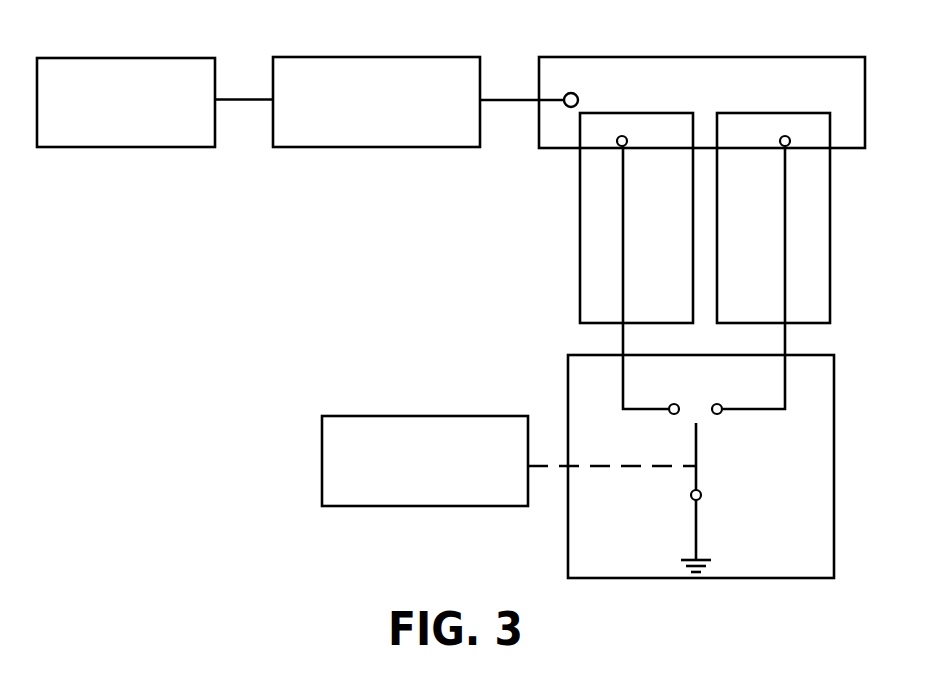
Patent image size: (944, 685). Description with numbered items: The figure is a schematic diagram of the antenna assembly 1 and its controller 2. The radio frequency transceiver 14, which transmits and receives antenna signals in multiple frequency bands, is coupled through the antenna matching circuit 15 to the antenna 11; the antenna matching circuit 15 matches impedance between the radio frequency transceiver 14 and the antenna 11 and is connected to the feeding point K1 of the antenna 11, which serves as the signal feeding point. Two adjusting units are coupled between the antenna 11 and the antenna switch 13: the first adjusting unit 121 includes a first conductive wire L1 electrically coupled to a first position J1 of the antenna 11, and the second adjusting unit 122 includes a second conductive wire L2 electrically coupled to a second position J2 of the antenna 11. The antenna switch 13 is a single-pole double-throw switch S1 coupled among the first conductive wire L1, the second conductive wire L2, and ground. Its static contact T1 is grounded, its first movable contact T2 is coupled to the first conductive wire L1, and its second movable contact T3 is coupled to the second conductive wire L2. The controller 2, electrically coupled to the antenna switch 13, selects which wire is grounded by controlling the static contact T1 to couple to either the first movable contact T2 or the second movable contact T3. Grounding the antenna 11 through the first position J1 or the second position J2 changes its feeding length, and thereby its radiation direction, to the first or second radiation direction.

The antenna assembly 1 is at (88, 38).
The radio frequency transceiver 14 is at (126, 102).
The antenna matching circuit 15 is at (376, 102).
The antenna 11 is at (757, 89).
The first adjusting unit 121 is at (686, 297).
The second adjusting unit 122 is at (770, 297).
The antenna switch 13 is at (811, 564).
The controller 2 is at (509, 461).
The feeding point K1 is at (572, 86).
The first position J1 is at (638, 132).
The second position J2 is at (800, 132).
The first conductive wire L1 is at (603, 220).
The second conductive wire L2 is at (808, 220).
The single-pole double-throw switch S1 is at (697, 468).
The static contact T1 is at (721, 495).
The first movable contact T2 is at (657, 437).
The second movable contact T3 is at (737, 437).